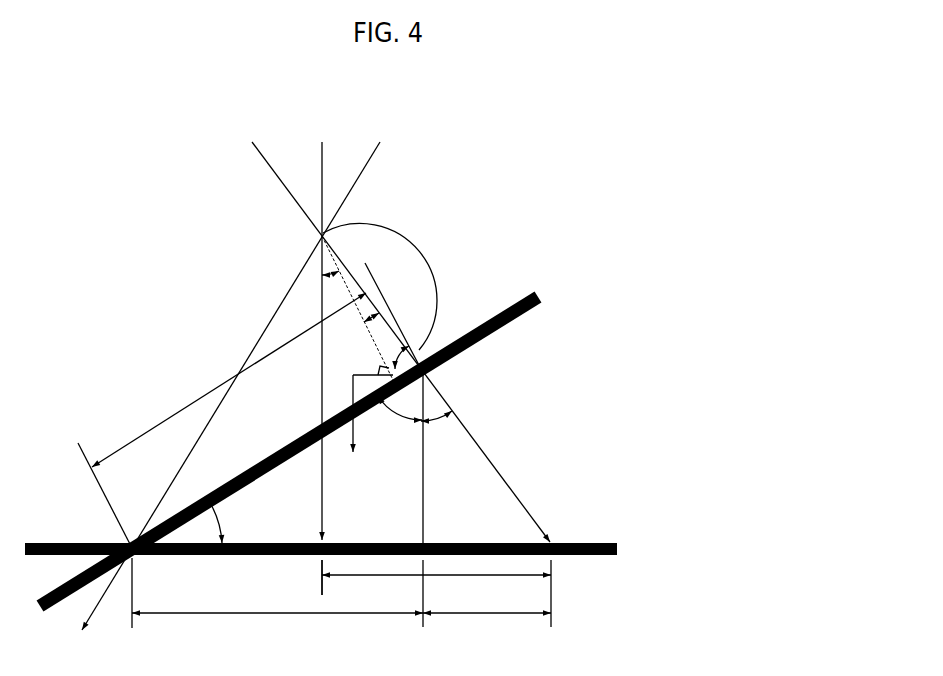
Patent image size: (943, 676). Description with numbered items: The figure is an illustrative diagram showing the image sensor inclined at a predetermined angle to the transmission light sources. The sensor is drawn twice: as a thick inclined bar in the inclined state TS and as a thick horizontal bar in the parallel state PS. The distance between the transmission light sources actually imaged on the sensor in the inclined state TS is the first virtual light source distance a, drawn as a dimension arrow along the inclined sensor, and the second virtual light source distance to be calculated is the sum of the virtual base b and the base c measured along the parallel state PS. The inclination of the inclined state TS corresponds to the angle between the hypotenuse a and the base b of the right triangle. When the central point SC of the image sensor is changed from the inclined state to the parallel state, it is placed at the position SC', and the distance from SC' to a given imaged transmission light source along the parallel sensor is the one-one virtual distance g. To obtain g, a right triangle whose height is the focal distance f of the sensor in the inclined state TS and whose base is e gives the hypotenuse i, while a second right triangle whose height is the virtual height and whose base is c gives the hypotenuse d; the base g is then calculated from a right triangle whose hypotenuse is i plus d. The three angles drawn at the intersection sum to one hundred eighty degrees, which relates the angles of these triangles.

The inclined state TS is at (371, 416).
The parallel state PS is at (384, 565).
The central point of the image sensor SC is at (375, 449).
The central point of the image sensor in the parallel state SC' is at (306, 577).
The first virtual light source distance a is at (222, 420).
The virtual base b is at (277, 624).
The base c is at (487, 625).
The hypotenuse d is at (401, 342).
The base e is at (372, 312).
The focal distance f is at (357, 308).
The 1-1 virtual distance g is at (436, 584).
The hypotenuse i is at (380, 287).